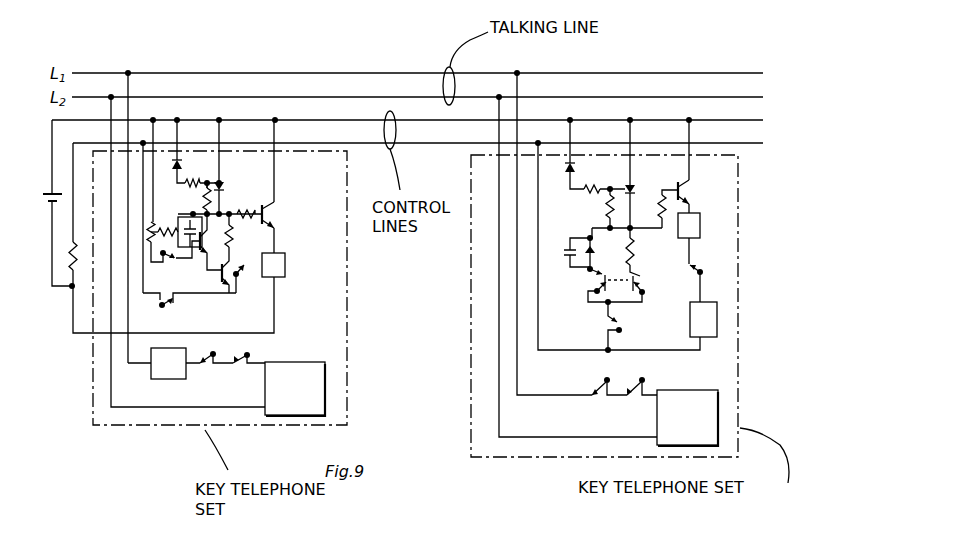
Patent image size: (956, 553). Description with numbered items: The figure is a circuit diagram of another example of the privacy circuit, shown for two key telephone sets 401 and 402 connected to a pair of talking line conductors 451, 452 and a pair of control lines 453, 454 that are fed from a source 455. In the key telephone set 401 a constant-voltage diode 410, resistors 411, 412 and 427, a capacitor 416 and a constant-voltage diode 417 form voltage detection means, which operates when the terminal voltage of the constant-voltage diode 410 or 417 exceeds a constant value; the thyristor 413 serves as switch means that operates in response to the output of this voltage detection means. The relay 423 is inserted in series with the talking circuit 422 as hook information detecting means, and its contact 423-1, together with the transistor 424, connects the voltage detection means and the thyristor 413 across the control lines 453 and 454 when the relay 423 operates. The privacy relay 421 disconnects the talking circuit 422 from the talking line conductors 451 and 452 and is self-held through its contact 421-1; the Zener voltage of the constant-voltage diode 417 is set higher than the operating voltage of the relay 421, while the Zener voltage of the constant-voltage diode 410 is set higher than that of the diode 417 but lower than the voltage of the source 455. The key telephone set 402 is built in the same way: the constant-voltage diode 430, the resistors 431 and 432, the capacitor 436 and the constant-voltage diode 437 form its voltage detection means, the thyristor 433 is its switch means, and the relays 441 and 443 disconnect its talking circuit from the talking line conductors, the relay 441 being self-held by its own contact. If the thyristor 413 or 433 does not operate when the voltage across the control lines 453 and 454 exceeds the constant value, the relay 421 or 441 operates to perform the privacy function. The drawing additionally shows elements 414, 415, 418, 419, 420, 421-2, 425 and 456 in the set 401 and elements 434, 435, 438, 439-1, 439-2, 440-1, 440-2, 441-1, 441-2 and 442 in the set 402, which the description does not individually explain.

The key telephone set 401 is at (188, 427).
The key telephone set 402 is at (527, 468).
The constant-voltage diode 410 is at (174, 168).
The resistor 411 is at (185, 178).
The resistor 412 is at (203, 187).
The thyristor 413 is at (226, 184).
The resistor 414 is at (246, 211).
The transistor 415 is at (276, 219).
The capacitor 416 is at (203, 206).
The constant-voltage diode 417 is at (203, 242).
The resistor 418 is at (234, 238).
The switch 419 is at (180, 307).
The switch 420 is at (246, 352).
The privacy relay 421 is at (286, 264).
The contact of privacy relay 421-1 is at (253, 283).
The relay contact 421-2 is at (213, 368).
The talking circuit 422 is at (300, 362).
The relay 423 is at (160, 380).
The contact of relay 423-1 is at (172, 262).
The transistor 424 is at (212, 268).
The resistor 425 is at (162, 215).
The resistor 427 is at (168, 237).
The constant-voltage diode 430 is at (565, 176).
The resistor 431 is at (578, 186).
The resistor 432 is at (605, 207).
The thyristor 433 is at (633, 186).
The resistor 434 is at (649, 209).
The transistor 435 is at (690, 186).
The capacitor 436 is at (572, 255).
The constant-voltage diode 437 is at (590, 273).
The resistor 438 is at (636, 253).
The relay contact 439-1 is at (588, 297).
The relay contact 439-2 is at (641, 290).
The relay contact 440-1 is at (612, 333).
The relay contact 440-2 is at (630, 396).
The relay 441 is at (700, 222).
The relay contact 441-1 is at (698, 271).
The relay contact 441-2 is at (598, 390).
The talking circuit 442 is at (690, 388).
The relay 443 is at (690, 318).
The talking line conductor 451 is at (302, 72).
The talking line conductor 452 is at (336, 97).
The control line 453 is at (340, 122).
The control line 454 is at (410, 145).
The source 455 is at (38, 205).
The resistor 456 is at (65, 255).